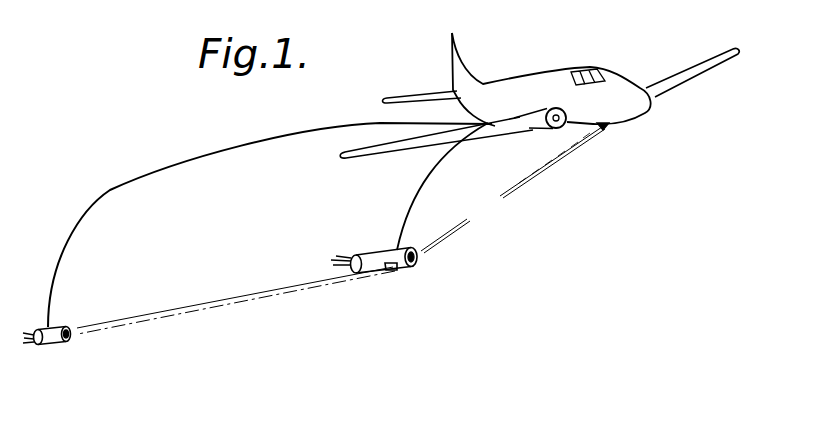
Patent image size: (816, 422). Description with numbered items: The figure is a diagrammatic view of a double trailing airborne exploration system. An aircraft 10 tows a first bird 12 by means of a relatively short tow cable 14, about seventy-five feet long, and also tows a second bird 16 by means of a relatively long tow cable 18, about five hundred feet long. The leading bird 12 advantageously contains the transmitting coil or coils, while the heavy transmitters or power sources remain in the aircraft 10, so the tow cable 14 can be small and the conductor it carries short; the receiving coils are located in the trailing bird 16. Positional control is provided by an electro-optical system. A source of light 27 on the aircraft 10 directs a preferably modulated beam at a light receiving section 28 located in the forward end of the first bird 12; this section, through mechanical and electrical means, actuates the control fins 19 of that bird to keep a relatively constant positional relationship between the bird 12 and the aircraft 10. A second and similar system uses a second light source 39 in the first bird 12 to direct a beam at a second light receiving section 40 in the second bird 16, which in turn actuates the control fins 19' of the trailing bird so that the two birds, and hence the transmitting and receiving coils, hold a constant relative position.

The aircraft 10 is at (623, 73).
The first bird 12 is at (422, 262).
The tow cable 14 is at (430, 172).
The second bird 16 is at (58, 345).
The tow cable 18 is at (112, 194).
The control fins 19 is at (332, 254).
The control fins 19' is at (29, 315).
The source of light 27 is at (608, 133).
The light receiving section 28 is at (409, 266).
The second light source 39 is at (392, 273).
The second light receiving section 40 is at (74, 338).